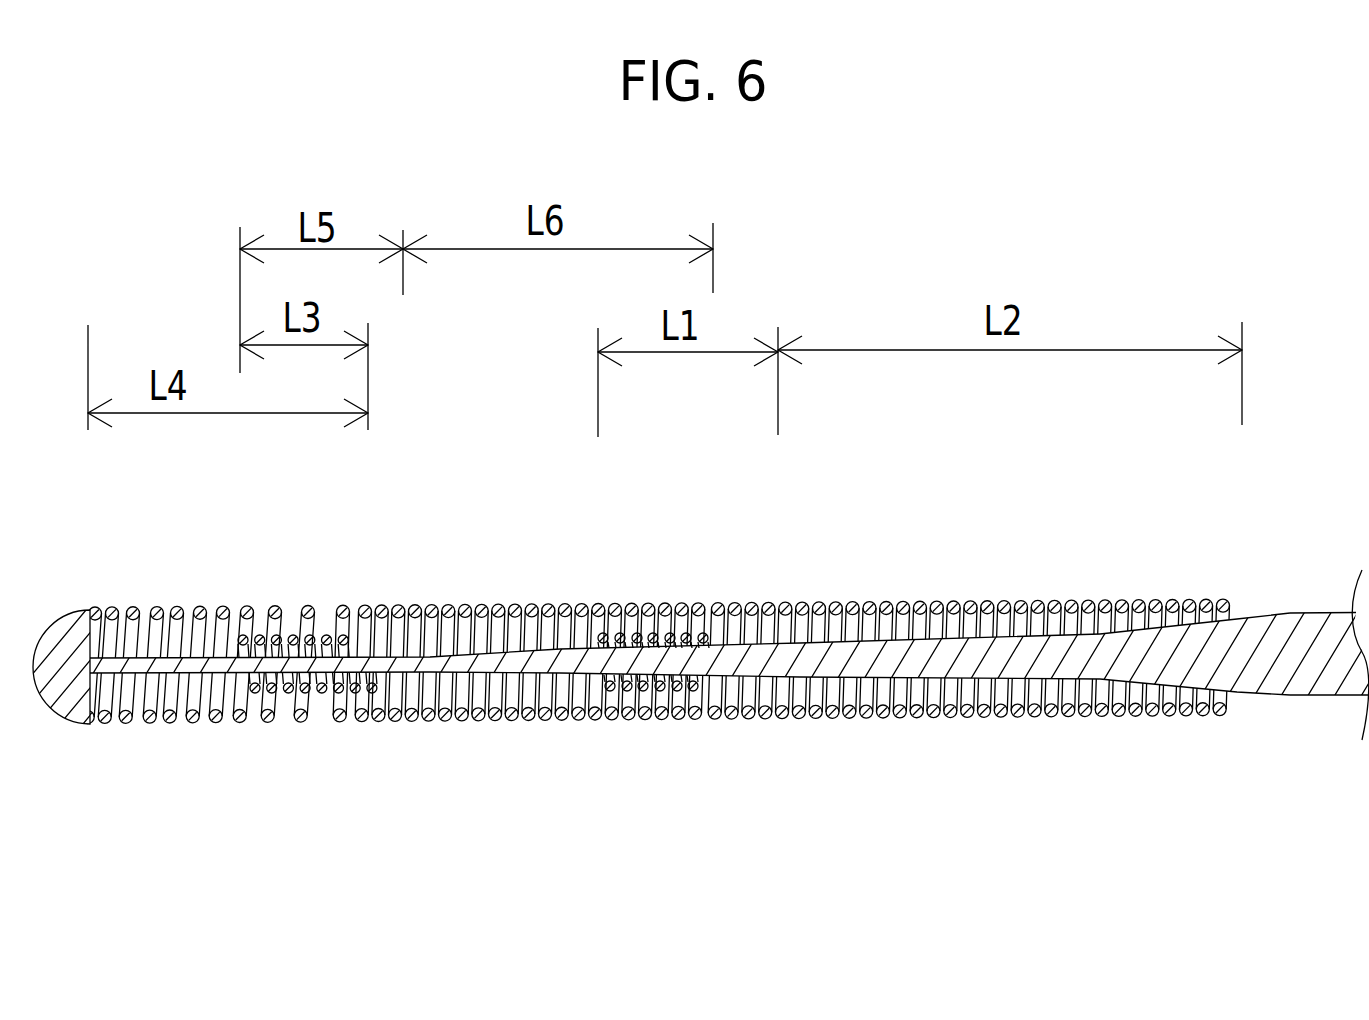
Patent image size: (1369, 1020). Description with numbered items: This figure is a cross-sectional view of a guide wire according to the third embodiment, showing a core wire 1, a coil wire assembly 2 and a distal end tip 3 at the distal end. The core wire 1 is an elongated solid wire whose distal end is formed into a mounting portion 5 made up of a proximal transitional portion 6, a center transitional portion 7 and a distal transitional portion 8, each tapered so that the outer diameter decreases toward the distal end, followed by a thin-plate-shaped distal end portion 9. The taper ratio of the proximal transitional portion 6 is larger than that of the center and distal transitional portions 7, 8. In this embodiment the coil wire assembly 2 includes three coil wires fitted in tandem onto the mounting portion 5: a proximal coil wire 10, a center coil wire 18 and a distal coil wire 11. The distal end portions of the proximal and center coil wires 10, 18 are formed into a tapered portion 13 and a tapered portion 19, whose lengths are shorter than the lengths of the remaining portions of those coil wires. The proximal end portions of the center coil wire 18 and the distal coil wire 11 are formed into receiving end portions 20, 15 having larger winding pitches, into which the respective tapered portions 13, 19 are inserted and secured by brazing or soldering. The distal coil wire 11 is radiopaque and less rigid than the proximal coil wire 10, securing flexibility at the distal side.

The core wire 1 is at (1345, 489).
The coil wire assembly 2 is at (868, 489).
The distal end tip 3 is at (58, 617).
The mounting portion 5 is at (1300, 731).
The proximal transitional portion 6 is at (1240, 667).
The center transitional portion 7 is at (1012, 668).
The distal transitional portion 8 is at (657, 660).
The distal end portion 9 is at (235, 657).
The proximal coil wire 10 is at (976, 562).
The distal coil wire 11 is at (153, 572).
The tapered portion 13 is at (738, 617).
The receiving end portion 15 is at (310, 608).
The center coil wire 18 is at (509, 567).
The tapered portion 19 is at (338, 697).
The receiving end portion 20 is at (688, 713).